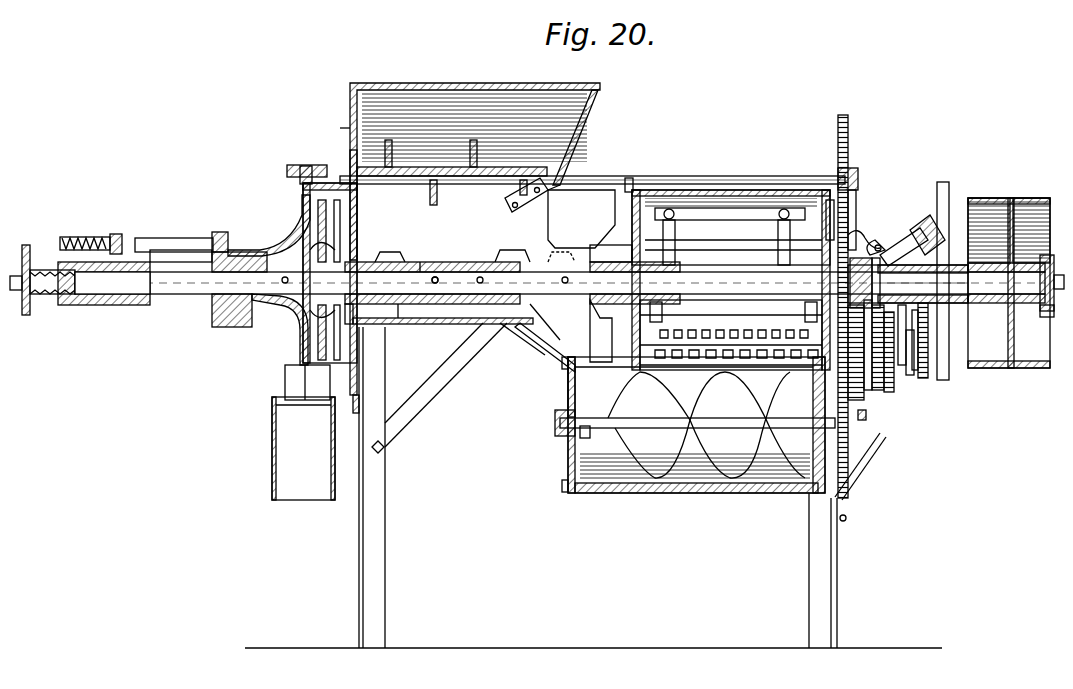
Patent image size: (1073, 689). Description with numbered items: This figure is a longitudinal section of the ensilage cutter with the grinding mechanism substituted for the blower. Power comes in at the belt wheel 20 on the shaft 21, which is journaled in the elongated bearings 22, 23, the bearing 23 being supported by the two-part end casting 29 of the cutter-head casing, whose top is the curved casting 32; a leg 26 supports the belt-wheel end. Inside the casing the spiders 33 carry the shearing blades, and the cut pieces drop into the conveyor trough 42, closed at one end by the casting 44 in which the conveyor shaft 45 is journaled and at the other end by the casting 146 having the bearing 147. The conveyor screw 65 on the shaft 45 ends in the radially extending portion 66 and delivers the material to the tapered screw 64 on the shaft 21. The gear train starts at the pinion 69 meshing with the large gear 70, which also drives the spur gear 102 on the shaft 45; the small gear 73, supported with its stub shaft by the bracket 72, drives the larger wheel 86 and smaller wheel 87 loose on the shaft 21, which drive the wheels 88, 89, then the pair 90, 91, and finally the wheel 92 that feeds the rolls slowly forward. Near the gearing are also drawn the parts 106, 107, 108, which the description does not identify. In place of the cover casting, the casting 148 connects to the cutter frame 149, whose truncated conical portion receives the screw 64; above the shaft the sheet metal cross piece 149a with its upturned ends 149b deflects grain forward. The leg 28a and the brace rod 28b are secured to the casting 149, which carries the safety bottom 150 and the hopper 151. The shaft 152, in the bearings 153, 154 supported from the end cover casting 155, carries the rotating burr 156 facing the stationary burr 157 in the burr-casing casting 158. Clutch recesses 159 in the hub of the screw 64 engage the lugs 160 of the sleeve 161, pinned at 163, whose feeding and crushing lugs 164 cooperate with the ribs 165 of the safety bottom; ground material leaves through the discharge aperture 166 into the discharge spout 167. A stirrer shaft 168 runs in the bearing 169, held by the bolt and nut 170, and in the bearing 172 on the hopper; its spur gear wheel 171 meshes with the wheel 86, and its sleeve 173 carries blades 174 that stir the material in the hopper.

The belt wheel 20 is at (1005, 210).
The shaft 21 is at (708, 290).
The elongated bearing 22 is at (950, 305).
The elongated bearing 23 is at (599, 331).
The leg 26 is at (828, 566).
The leg 28a is at (386, 530).
The brace rod 28b is at (440, 395).
The two-part end casting 29 is at (635, 274).
The curved casting 32 is at (720, 190).
The end casting or spider 33 is at (780, 313).
The conveyor trough 42 is at (736, 478).
The casting 44 is at (813, 385).
The conveyor shaft 45 is at (682, 425).
The screw 64 is at (554, 324).
The conveyor screw 65 is at (658, 396).
The radially extending portion 66 is at (580, 432).
The spur gear pinion 69 is at (800, 283).
The large gear 70 is at (848, 360).
The bracket 72 is at (930, 330).
The small gear 73 is at (866, 390).
The larger spur gear wheel 86 is at (860, 235).
The smaller spur gear wheel 87 is at (870, 283).
The larger spur gear wheel 88 is at (893, 283).
The smaller spur gear wheel 89 is at (924, 287).
The larger spur gear wheel 90 is at (868, 418).
The smaller spur gear wheel 91 is at (885, 400).
The larger spur gear wheel 92 is at (905, 350).
The large spur gear wheel 102 is at (840, 472).
The bracket 106 is at (940, 222).
The pawl 107 is at (900, 240).
The pawl pivot 108 is at (879, 236).
The casting 146 is at (568, 393).
The bearing 147 is at (560, 435).
The casting 148 is at (605, 176).
The cutter frame 149 is at (541, 347).
The sheet metal cross piece 149a is at (512, 204).
The upturned ends 149b is at (544, 185).
The safety bottom 150 is at (439, 300).
The hopper 151 is at (470, 78).
The shaft 152 is at (175, 296).
The bearing 153 is at (132, 300).
The bearing 154 is at (213, 305).
The end cover casting 155 is at (250, 246).
The rotating burr 156 is at (310, 215).
The stationary burr 157 is at (305, 183).
The burr-casing casting 158 is at (326, 180).
The clutch recesses 159 is at (518, 339).
The lugs 160 is at (568, 250).
The sleeve 161 is at (420, 262).
The pin 163 is at (437, 278).
The feeding and crushing lugs 164 is at (500, 252).
The ribs 165 is at (402, 320).
The discharge aperture 166 is at (300, 375).
The discharge spout 167 is at (280, 448).
The stirrer shaft 168 is at (650, 180).
The bearing 169 is at (838, 168).
The bolt and nut 170 is at (840, 230).
The spur gear wheel 171 is at (838, 123).
The bearing 172 is at (398, 190).
The sleeve 173 is at (428, 160).
The blades 174 is at (470, 140).